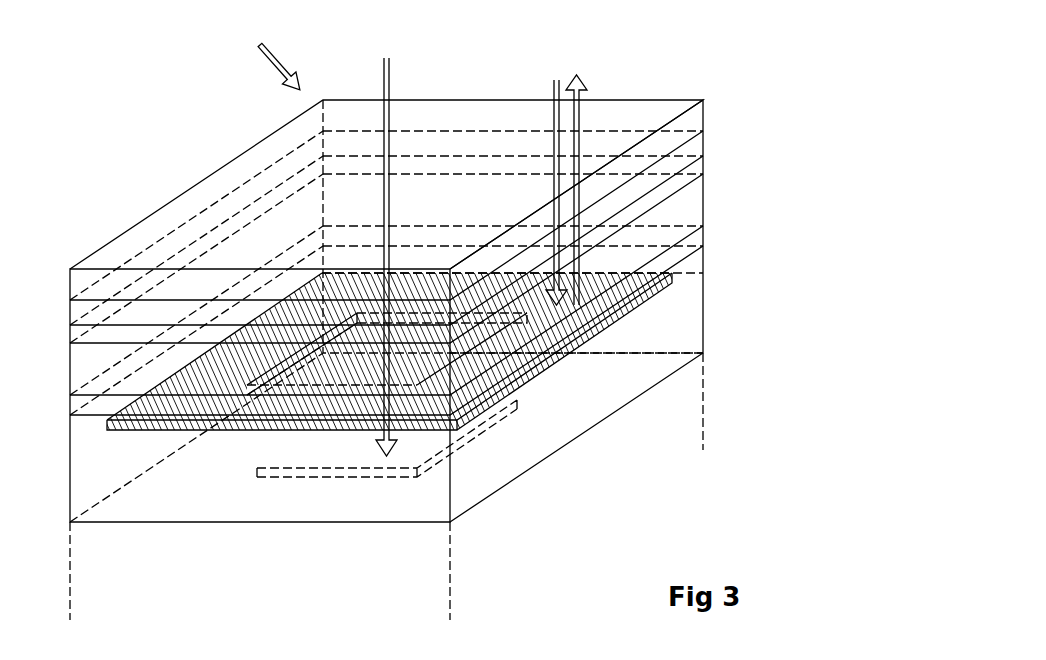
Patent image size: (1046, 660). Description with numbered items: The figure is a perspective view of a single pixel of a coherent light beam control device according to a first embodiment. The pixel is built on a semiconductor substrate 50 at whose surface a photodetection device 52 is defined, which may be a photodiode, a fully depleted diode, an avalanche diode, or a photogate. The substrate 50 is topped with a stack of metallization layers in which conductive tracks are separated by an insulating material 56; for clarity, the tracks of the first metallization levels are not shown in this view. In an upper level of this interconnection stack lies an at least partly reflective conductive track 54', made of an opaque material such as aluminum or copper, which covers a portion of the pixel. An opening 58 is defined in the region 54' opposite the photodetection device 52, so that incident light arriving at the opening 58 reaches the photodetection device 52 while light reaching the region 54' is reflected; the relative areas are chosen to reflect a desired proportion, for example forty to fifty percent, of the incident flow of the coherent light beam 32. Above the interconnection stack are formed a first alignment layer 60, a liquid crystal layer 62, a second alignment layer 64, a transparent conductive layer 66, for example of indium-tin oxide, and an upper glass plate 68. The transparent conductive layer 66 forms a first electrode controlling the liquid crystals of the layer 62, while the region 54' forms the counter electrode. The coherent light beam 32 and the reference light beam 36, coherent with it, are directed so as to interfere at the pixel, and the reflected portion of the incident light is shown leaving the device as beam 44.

The coherent light beam 32 is at (390, 73).
The reference light beam 36 is at (283, 49).
The reflected light beam 44 is at (582, 86).
The semiconductor substrate 50 is at (693, 405).
The photodetection device 52 is at (292, 462).
The at least partly reflective conductive track 54' is at (542, 264).
The insulating material 56 is at (675, 316).
The opening 58 is at (330, 371).
The first alignment layer 60 is at (694, 243).
The liquid crystal layer 62 is at (694, 202).
The second alignment layer 64 is at (694, 168).
The transparent conductive layer 66 is at (694, 143).
The upper glass plate 68 is at (694, 112).